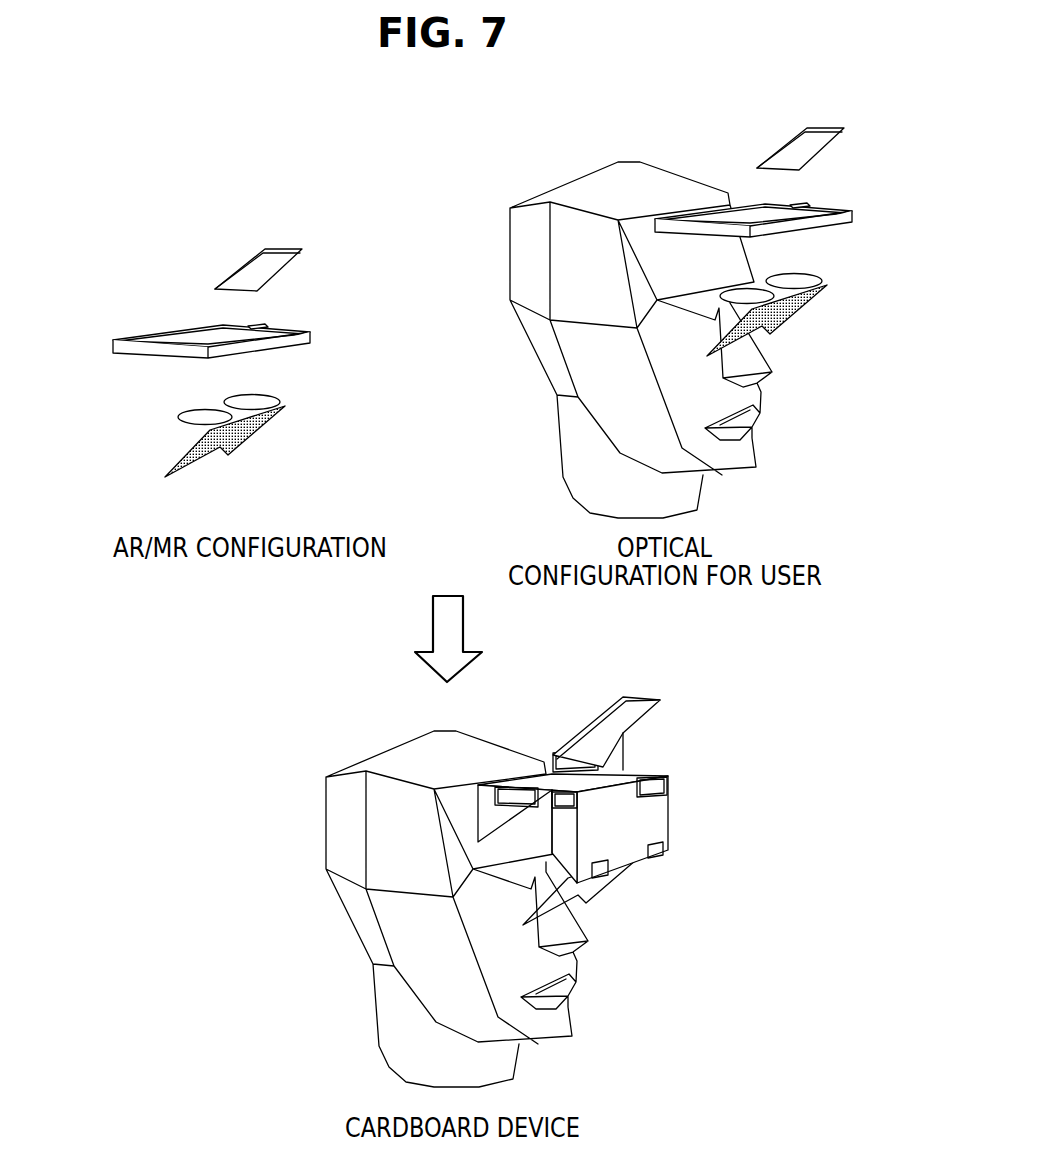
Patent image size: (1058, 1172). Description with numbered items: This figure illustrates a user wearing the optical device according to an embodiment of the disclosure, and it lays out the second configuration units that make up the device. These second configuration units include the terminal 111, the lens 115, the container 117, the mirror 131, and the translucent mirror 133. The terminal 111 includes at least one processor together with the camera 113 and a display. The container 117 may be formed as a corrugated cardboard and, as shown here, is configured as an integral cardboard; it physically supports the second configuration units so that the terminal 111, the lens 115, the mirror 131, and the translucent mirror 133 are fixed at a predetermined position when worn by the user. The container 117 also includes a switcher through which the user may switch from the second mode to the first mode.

The terminal 111 is at (310, 333).
The camera 113 is at (248, 326).
The lens 115 is at (178, 416).
The container 117 is at (667, 812).
The mirror 131 is at (283, 248).
The translucent mirror 133 is at (268, 428).